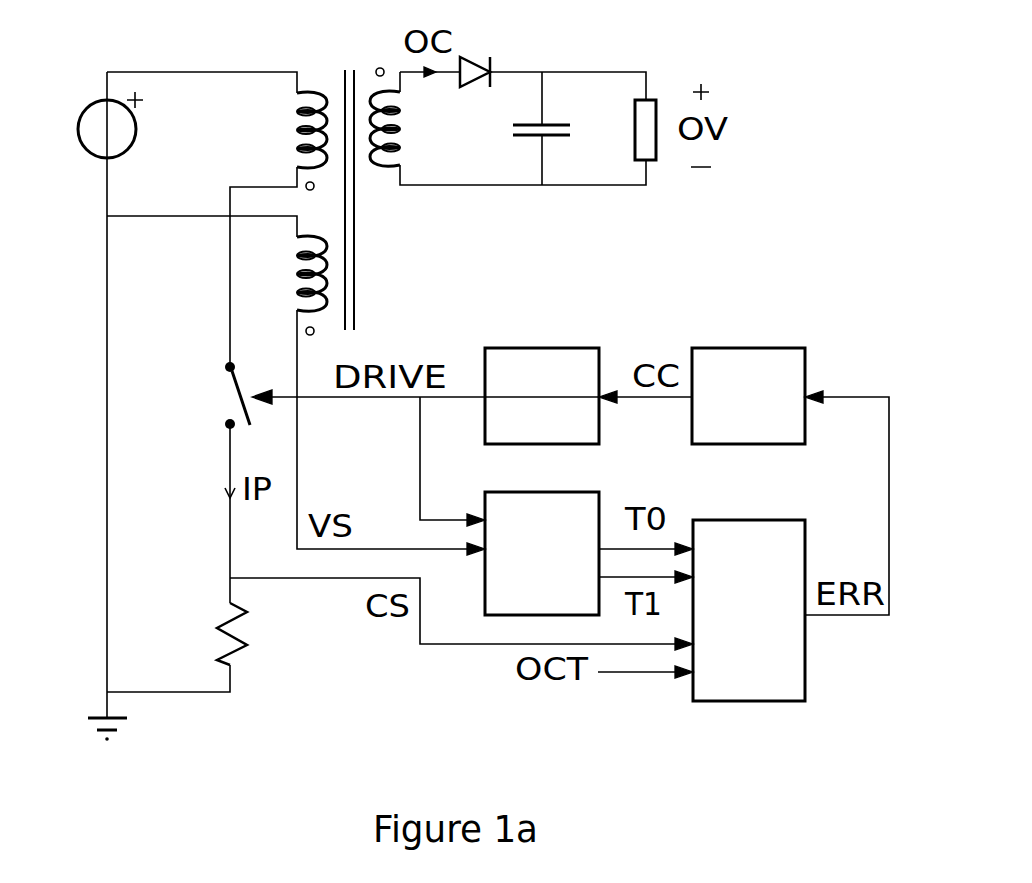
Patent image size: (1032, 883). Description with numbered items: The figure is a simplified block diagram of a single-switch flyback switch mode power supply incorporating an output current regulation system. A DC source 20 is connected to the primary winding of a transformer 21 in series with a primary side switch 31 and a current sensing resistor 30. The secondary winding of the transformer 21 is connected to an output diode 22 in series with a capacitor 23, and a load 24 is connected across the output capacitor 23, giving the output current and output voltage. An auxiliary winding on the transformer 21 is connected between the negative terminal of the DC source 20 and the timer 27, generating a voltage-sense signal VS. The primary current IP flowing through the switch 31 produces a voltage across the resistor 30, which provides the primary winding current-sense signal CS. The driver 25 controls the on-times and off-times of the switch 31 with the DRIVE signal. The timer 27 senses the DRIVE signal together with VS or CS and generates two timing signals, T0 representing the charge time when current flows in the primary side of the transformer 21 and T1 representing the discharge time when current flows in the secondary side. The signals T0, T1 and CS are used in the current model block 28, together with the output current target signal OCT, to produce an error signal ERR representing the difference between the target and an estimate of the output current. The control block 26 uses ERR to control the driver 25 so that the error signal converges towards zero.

The DC source 20 is at (88, 125).
The transformer 21 is at (348, 182).
The output diode 22 is at (494, 53).
The capacitor 23 is at (523, 128).
The load 24 is at (623, 138).
The driver 25 is at (542, 375).
The control block 26 is at (748, 375).
The timer 27 is at (542, 532).
The current model block 28 is at (749, 590).
The current sensing resistor 30 is at (252, 634).
The primary side switch 31 is at (217, 395).